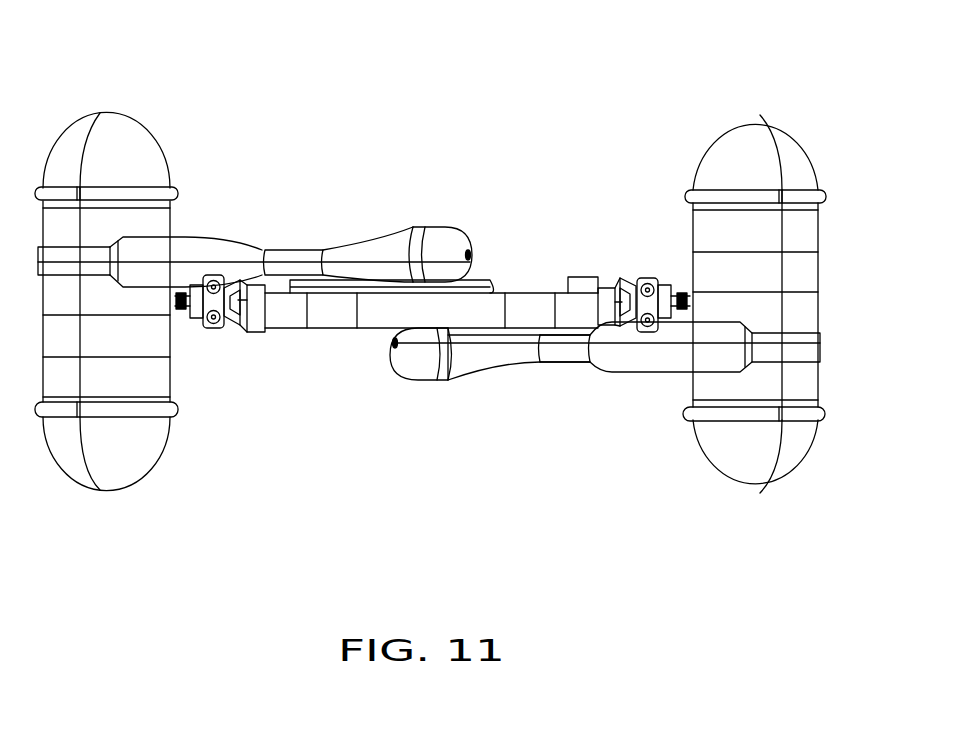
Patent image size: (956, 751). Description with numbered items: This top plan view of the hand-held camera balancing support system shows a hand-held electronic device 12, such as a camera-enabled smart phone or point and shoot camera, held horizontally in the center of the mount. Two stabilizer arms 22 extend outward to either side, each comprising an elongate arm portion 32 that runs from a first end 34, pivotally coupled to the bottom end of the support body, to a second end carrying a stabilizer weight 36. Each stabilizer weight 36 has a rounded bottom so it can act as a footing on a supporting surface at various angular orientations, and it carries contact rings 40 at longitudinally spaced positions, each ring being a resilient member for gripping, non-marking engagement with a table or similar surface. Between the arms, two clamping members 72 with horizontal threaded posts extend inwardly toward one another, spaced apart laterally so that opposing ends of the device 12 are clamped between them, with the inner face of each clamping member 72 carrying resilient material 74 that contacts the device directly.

The hand-held electronic device 12 is at (487, 315).
The stabilizer arm 22 is at (290, 245).
The elongate arm portion 32 is at (338, 248).
The first end 34 is at (425, 245).
The stabilizer weight 36 is at (130, 150).
The contact ring 40 is at (178, 195).
The clamping member 72 is at (247, 332).
The resilient material 74 is at (270, 330).